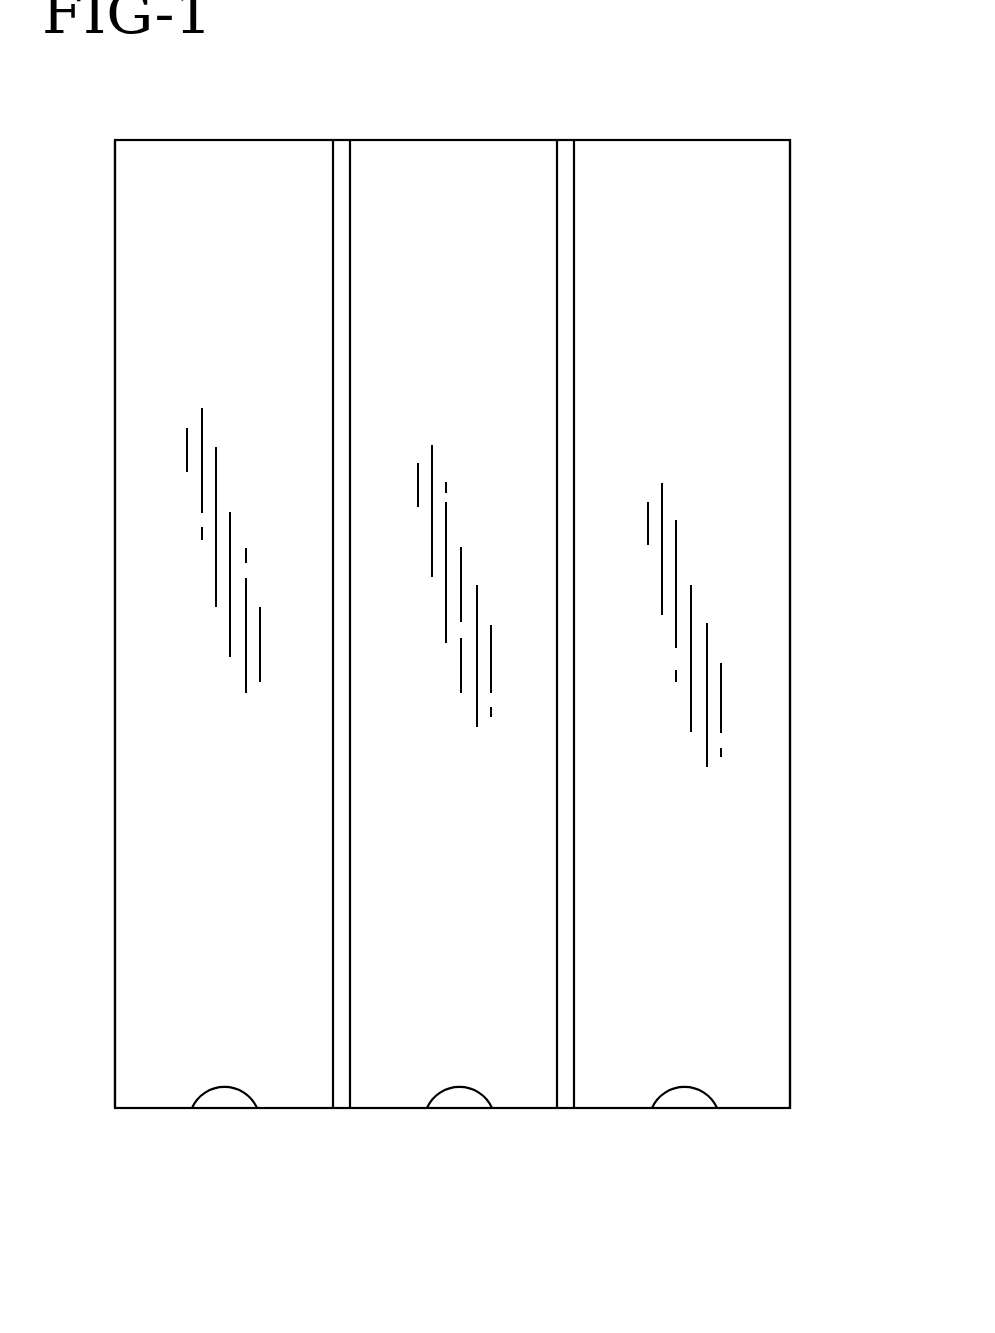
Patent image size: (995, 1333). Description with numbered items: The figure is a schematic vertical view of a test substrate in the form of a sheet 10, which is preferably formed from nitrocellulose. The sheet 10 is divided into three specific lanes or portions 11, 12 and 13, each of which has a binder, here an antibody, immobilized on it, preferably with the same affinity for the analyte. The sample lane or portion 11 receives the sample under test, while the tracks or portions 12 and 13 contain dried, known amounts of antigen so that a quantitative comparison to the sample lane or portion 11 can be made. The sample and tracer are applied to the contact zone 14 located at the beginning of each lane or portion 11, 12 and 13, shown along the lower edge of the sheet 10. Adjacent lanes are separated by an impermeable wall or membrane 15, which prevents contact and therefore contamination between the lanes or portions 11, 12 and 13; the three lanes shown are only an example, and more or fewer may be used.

The sheet 10 is at (790, 462).
The sample lane or portion 11 is at (141, 1108).
The track or portion 12 is at (374, 1108).
The track or portion 13 is at (600, 1108).
The contact zone 14 is at (229, 1098).
The impermeable wall or membrane 15 is at (340, 158).